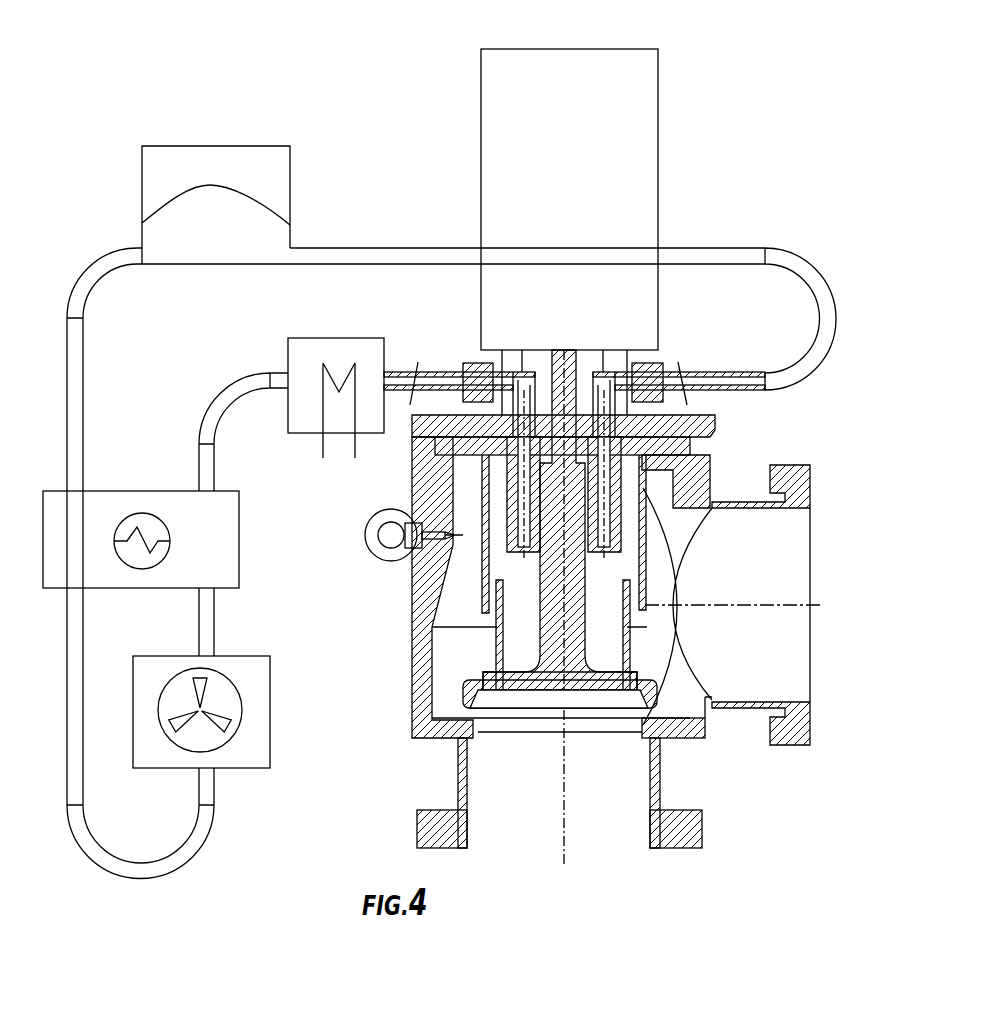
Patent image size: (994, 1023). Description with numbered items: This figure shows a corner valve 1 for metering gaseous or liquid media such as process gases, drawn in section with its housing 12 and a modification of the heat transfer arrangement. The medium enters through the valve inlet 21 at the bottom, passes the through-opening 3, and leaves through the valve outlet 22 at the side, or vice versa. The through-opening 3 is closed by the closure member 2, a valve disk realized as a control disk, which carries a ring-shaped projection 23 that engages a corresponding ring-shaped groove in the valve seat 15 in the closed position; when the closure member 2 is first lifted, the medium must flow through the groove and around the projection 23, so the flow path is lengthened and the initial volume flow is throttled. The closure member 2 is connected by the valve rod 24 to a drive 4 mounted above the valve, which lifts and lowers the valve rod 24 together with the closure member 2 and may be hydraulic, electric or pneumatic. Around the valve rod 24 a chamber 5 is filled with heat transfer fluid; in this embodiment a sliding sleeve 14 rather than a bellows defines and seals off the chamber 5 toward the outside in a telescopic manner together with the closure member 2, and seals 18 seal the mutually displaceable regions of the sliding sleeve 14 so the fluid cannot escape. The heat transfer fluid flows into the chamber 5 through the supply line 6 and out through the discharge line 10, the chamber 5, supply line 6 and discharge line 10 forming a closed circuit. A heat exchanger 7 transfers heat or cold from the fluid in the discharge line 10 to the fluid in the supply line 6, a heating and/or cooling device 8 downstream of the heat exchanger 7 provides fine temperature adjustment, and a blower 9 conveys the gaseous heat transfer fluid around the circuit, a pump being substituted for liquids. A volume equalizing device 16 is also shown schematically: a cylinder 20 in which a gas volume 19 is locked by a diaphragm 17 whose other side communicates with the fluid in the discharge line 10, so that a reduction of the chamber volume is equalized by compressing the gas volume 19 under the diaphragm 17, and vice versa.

The valve 1 is at (768, 427).
The closure member 2 is at (537, 688).
The through-opening 3 is at (550, 728).
The drive 4 is at (647, 148).
The chamber 5 is at (630, 570).
The supply line 6 is at (245, 385).
The heat exchanger 7 is at (222, 570).
The heating and/or cooling device 8 is at (373, 357).
The blower 9 is at (253, 755).
The discharge line 10 is at (682, 253).
The housing 12 is at (418, 645).
The sliding sleeve 14 is at (643, 490).
The valve seat 15 is at (472, 722).
The volume equalizing device 16 is at (267, 158).
The diaphragm 17 is at (158, 207).
The seal 18 is at (497, 587).
The gas volume 19 is at (205, 172).
The cylinder 20 is at (140, 158).
The valve inlet 21 is at (587, 828).
The valve outlet 22 is at (753, 535).
The projection 23 is at (463, 690).
The valve rod 24 is at (523, 553).